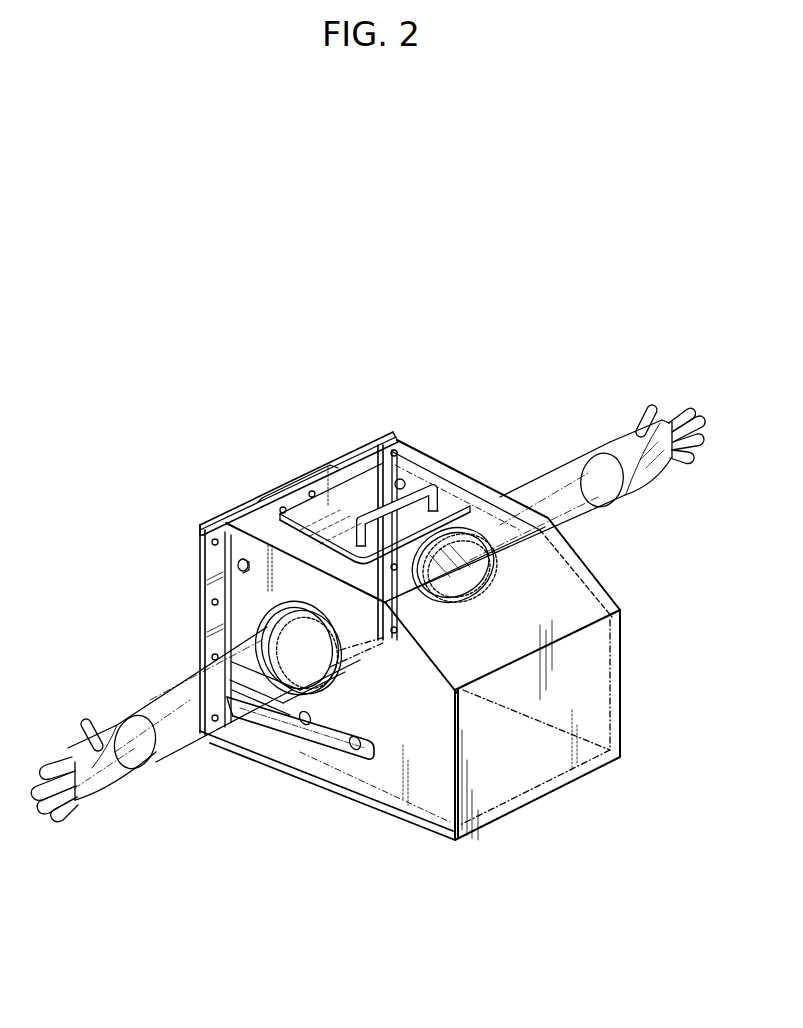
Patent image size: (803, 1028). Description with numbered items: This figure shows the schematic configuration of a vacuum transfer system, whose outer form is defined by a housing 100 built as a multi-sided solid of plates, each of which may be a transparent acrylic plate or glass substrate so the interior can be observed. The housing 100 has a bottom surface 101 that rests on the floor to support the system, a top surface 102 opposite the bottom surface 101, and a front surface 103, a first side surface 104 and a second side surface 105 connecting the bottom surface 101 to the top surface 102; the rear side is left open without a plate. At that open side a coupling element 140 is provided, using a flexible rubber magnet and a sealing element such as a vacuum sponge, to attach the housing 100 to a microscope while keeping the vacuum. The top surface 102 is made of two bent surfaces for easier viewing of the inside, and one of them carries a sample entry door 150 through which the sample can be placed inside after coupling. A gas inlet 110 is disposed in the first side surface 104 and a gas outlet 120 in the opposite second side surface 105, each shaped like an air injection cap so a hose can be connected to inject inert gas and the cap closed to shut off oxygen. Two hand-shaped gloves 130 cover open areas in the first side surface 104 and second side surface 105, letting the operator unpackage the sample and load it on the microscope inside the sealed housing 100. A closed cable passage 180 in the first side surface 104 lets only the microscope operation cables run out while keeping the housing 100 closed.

The housing 100 is at (610, 943).
The bottom surface 101 is at (522, 777).
The top surface 102 is at (593, 568).
The front surface 103 is at (590, 700).
The first side surface 104 is at (431, 769).
The second side surface 105 is at (610, 594).
The gas inlet 110 is at (233, 567).
The gas outlet 120 is at (413, 473).
The glove 130 is at (614, 432).
The coupling element 140 is at (213, 525).
The sample entry door 150 is at (335, 463).
The closed cable passage 180 is at (318, 733).